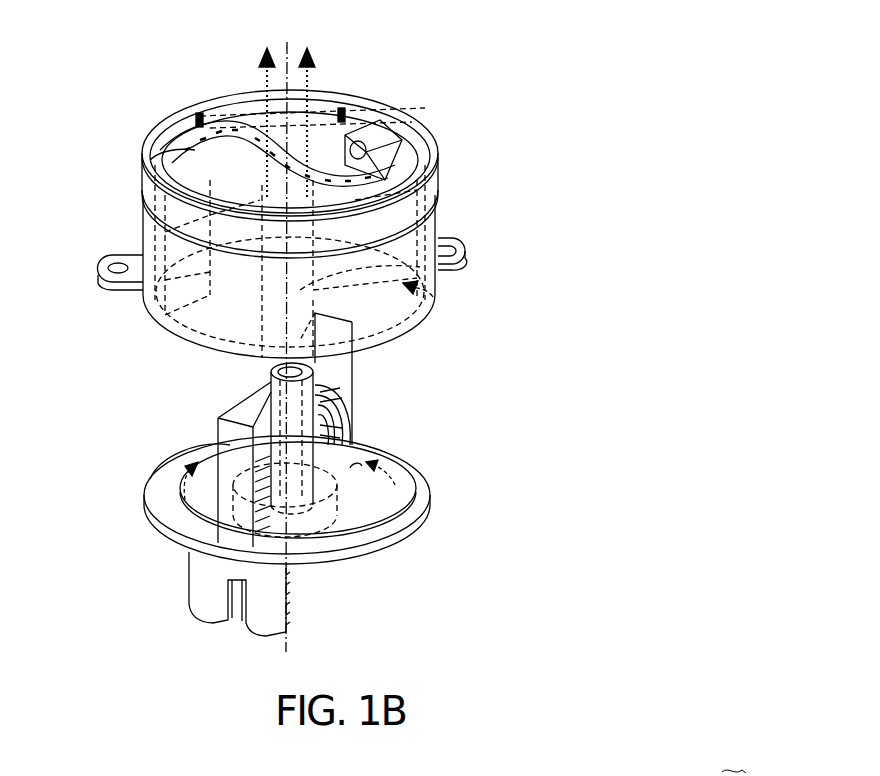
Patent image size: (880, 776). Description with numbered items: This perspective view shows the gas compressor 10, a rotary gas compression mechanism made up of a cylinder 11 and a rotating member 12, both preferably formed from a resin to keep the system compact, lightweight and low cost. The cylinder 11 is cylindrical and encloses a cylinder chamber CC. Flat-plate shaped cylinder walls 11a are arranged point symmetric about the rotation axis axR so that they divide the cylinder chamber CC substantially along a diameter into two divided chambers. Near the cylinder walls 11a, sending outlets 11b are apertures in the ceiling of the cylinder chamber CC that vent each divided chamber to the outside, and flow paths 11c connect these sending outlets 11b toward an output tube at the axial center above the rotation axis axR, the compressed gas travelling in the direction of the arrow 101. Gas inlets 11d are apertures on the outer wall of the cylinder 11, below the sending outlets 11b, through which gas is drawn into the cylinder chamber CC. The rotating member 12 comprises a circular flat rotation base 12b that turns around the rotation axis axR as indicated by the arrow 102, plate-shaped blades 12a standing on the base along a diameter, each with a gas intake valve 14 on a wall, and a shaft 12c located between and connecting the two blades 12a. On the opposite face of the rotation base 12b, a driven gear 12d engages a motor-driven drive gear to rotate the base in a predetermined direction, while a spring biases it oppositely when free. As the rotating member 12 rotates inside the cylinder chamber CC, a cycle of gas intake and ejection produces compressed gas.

The gas compressor 10 is at (500, 44).
The cylinder 11 is at (462, 170).
The cylinder walls 11a is at (200, 327).
The sending outlets 11b is at (397, 132).
The flow paths 11c is at (203, 122).
The gas inlets 11d is at (128, 308).
The rotating member 12 is at (446, 449).
The blades 12a is at (263, 393).
The rotation base 12b is at (415, 492).
The shaft 12c is at (268, 364).
The driven gear 12d is at (413, 545).
The gas intake valve 14 is at (195, 458).
The arrow 101 is at (325, 160).
The arrow 102 is at (150, 479).
The cylinder chamber CC is at (433, 297).
The rotation axis axR is at (289, 332).